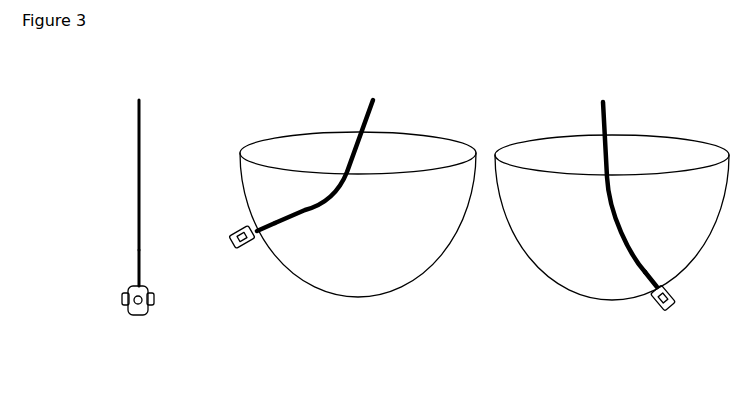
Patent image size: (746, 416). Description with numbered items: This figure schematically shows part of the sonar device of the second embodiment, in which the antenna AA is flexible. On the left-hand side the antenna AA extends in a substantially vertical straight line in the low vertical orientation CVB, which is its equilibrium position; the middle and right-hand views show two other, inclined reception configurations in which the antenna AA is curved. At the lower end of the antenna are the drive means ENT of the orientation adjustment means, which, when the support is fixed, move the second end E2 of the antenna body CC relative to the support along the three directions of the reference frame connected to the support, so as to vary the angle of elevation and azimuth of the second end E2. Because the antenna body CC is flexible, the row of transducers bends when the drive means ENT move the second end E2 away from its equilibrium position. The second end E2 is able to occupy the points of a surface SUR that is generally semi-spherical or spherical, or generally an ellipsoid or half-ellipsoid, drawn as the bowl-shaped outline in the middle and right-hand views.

The antenna AA is at (131, 173).
The connecting body CVB is at (118, 267).
The drive means ENT is at (121, 318).
The second end E2 is at (262, 233).
The antenna body CC is at (357, 150).
The surface SUR is at (355, 297).